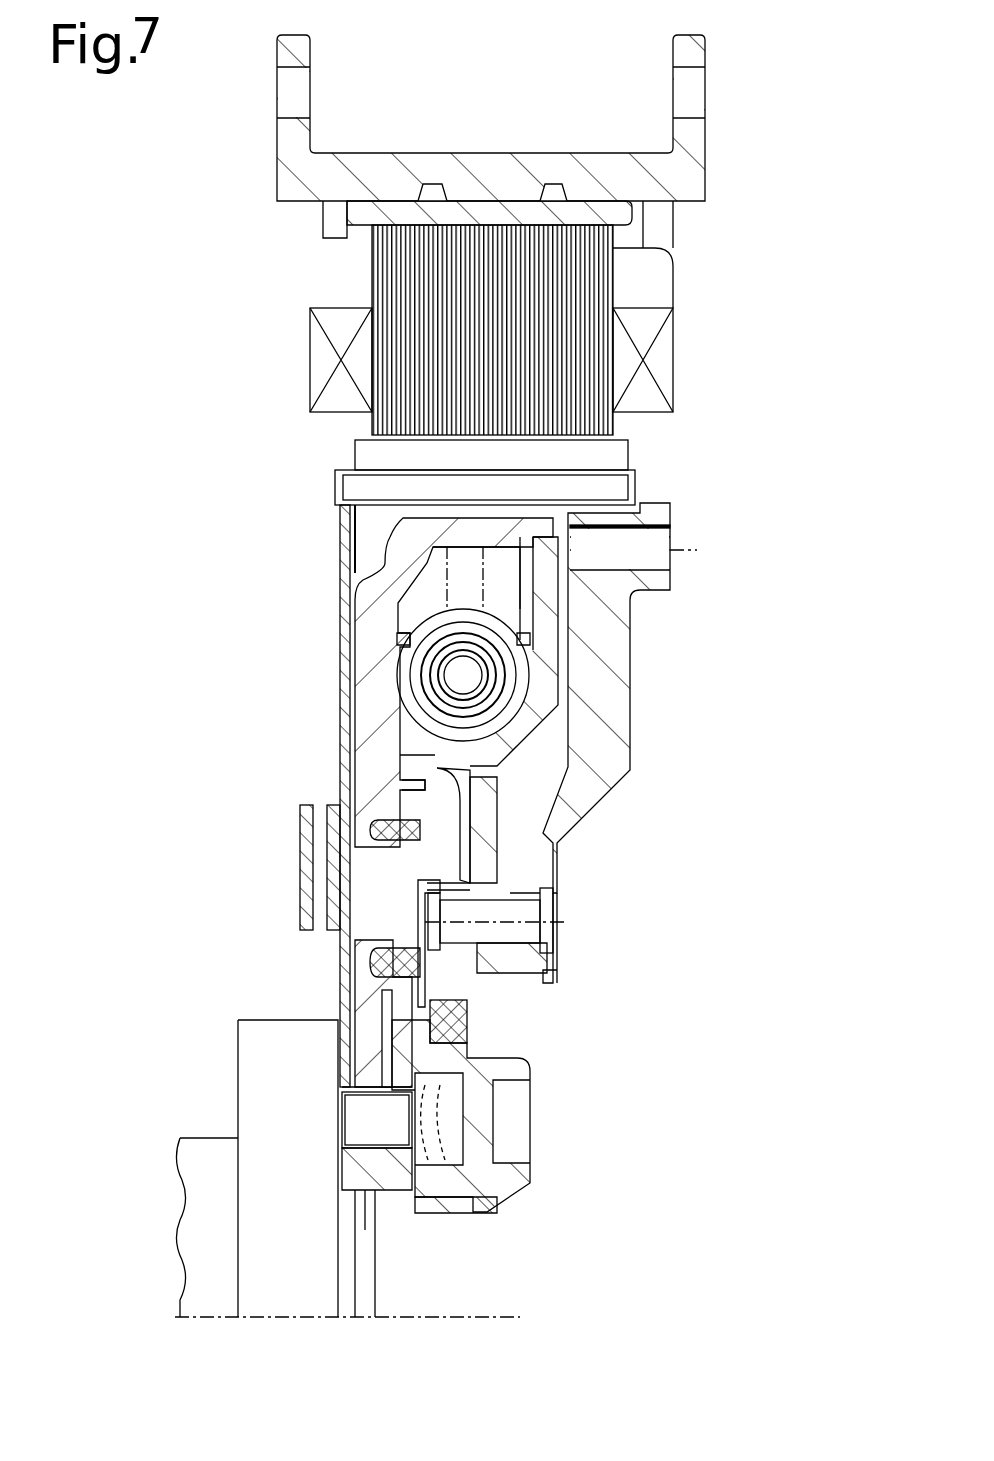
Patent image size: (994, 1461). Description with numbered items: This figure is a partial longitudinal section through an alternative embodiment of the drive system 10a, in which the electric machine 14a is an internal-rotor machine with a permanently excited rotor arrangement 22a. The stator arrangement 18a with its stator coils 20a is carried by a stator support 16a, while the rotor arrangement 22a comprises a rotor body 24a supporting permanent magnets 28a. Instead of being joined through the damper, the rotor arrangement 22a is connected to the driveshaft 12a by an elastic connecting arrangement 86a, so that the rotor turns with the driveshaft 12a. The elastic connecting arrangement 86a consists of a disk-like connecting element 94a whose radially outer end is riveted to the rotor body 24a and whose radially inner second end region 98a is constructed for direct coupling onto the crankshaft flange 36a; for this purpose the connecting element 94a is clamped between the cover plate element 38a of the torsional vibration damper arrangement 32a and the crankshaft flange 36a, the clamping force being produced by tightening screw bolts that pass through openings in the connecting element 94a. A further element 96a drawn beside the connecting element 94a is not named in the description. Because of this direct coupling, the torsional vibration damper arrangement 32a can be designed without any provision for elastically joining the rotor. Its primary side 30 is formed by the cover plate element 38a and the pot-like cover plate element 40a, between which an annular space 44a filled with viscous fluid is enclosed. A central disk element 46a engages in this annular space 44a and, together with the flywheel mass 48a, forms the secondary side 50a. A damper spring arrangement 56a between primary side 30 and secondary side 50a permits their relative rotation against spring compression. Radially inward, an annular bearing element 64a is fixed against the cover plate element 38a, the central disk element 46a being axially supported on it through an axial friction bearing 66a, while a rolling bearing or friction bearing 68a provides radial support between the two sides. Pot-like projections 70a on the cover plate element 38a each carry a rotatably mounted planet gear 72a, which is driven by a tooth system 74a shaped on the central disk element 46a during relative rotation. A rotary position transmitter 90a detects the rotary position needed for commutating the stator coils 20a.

The drive system 10a is at (268, 228).
The driveshaft 12a is at (188, 1205).
The electric machine 14a is at (724, 288).
The stator support 16a is at (495, 153).
The stator arrangement 18a is at (590, 108).
The stator coils 20a is at (395, 272).
The rotor arrangement 22a is at (662, 451).
The rotor body 24a is at (638, 483).
The permanent magnets 28a is at (370, 455).
The primary side 30 is at (311, 766).
The torsional vibration damper arrangement 32a is at (253, 741).
The crankshaft flange 36a is at (258, 1048).
The cover plate element 38a is at (365, 676).
The cover plate element 40a is at (525, 735).
The annular space 44a is at (510, 578).
The central disk element 46a is at (525, 1117).
The flywheel mass 48a is at (632, 672).
The secondary side 50a is at (657, 775).
The damper spring arrangement 56a is at (525, 670).
The annular bearing element 64a is at (327, 1008).
The axial friction bearing 66a is at (455, 1022).
The rolling bearing or friction bearing 68a is at (455, 1195).
The pot-like projections 70a is at (393, 885).
The planet gear 72a is at (410, 980).
The tooth system 74a is at (427, 768).
The elastic connecting arrangement 86a is at (298, 568).
The rotary position transmitter 90a is at (300, 888).
The connecting element 94a is at (343, 636).
The sheet metal wall 96a is at (340, 522).
The radially inner second end region 98a is at (340, 1077).